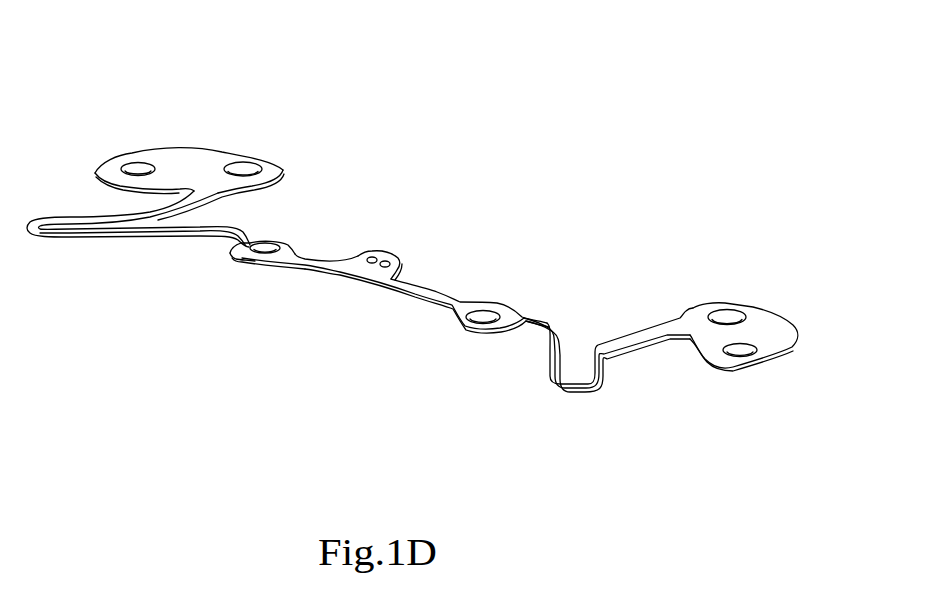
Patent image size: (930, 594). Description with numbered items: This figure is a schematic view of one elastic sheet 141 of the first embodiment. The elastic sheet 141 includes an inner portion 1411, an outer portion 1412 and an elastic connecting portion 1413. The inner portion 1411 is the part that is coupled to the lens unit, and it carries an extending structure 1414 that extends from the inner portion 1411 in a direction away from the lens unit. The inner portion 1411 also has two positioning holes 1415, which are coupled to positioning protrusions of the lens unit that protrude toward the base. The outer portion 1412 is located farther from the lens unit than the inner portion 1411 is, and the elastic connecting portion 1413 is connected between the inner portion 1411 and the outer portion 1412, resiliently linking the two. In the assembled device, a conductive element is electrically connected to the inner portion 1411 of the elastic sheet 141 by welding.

The elastic sheet 141 is at (423, 265).
The inner portion 1411 is at (436, 292).
The outer portion 1412 is at (764, 326).
The elastic connecting portion 1413 is at (584, 393).
The extending structure 1414 is at (385, 253).
The positioning holes 1415 is at (231, 256).